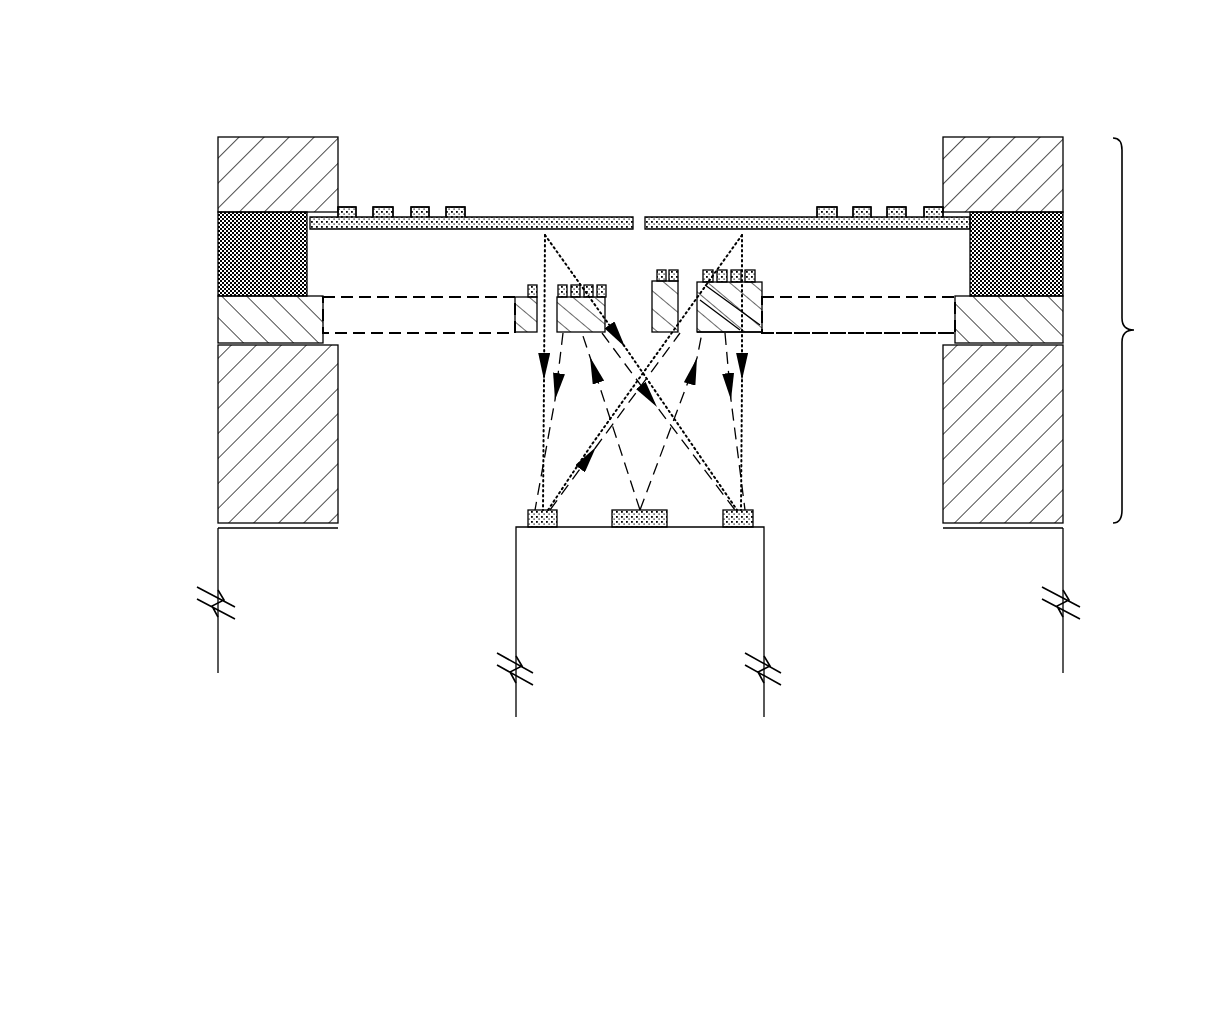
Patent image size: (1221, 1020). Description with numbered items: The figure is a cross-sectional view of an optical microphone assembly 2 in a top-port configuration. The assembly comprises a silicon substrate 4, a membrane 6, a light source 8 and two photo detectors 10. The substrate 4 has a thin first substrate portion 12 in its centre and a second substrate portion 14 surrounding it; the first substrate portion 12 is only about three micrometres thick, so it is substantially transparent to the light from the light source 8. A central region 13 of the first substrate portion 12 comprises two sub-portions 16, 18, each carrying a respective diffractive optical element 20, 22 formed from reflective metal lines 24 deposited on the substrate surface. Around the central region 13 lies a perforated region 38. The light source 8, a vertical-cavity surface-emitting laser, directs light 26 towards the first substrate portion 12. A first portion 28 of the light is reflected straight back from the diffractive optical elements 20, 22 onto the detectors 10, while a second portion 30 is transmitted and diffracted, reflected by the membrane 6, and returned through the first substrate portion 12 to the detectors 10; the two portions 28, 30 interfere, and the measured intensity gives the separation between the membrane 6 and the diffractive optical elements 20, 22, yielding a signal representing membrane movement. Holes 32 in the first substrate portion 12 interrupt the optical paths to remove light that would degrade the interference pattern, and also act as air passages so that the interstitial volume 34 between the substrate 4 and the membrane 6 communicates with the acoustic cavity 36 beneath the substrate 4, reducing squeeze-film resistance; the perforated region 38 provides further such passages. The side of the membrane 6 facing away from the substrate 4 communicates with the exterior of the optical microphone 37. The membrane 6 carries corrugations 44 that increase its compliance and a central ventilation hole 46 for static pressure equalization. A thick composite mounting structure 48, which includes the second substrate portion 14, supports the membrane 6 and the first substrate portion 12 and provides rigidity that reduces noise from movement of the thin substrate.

The optical microphone assembly 2 is at (182, 119).
The substrate 4 is at (791, 346).
The membrane 6 is at (797, 222).
The light source 8 is at (648, 528).
The photo detectors 10 is at (543, 528).
The first substrate portion 12 is at (756, 337).
The central region 13 is at (734, 302).
The second substrate portion 14 is at (241, 322).
The sub-portion 16 is at (513, 285).
The sub-portion 18 is at (774, 273).
The diffractive optical element 20 is at (581, 265).
The diffractive optical element 22 is at (699, 265).
The reflective metal lines 24 is at (660, 270).
The light 26 is at (627, 461).
The first portion of light 28 is at (549, 437).
The second portion of light 30 is at (541, 255).
The holes 32 is at (628, 301).
The interstitial volume 34 is at (325, 271).
The acoustic cavity 36 is at (868, 604).
The exterior of the optical microphone 37 is at (893, 106).
The perforated region 38 is at (410, 311).
The corrugations 44 is at (418, 208).
The central ventilation hole 46 is at (638, 222).
The mounting structure 48 is at (1055, 405).